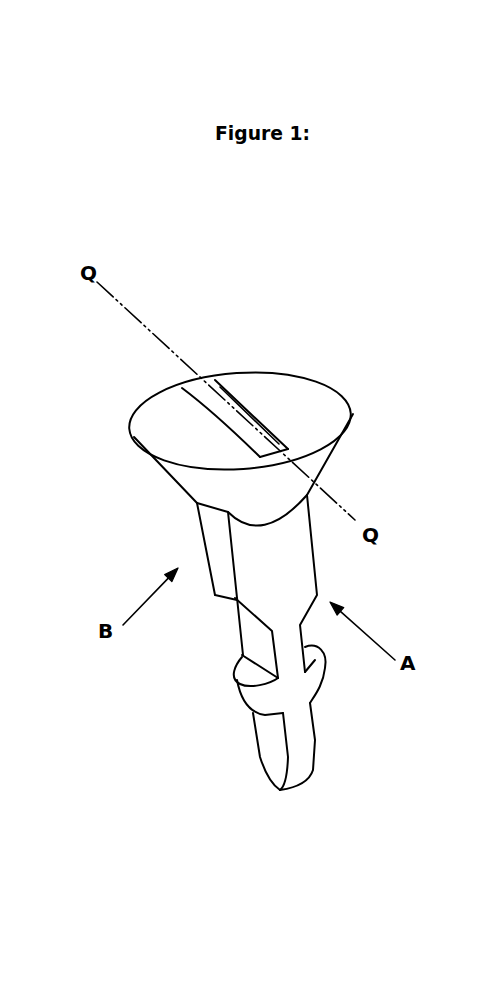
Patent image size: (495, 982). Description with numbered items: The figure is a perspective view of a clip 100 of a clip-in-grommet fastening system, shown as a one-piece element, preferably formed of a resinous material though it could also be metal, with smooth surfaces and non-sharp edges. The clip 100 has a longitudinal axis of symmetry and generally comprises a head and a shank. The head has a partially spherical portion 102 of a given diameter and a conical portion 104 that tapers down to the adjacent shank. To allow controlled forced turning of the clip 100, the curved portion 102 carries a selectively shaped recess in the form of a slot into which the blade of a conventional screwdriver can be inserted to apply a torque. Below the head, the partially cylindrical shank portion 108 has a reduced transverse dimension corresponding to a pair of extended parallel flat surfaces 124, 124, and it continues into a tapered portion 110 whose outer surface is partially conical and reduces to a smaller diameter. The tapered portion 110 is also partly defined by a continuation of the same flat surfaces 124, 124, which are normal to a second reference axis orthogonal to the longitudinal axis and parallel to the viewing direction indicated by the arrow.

The clip 100 is at (266, 502).
The partially spherical portion 102 is at (303, 403).
The conical portion 104 is at (308, 462).
The partially cylindrical shank portion 108 is at (215, 550).
The tapered portion 110 is at (233, 612).
The flat surfaces 124 is at (277, 593).